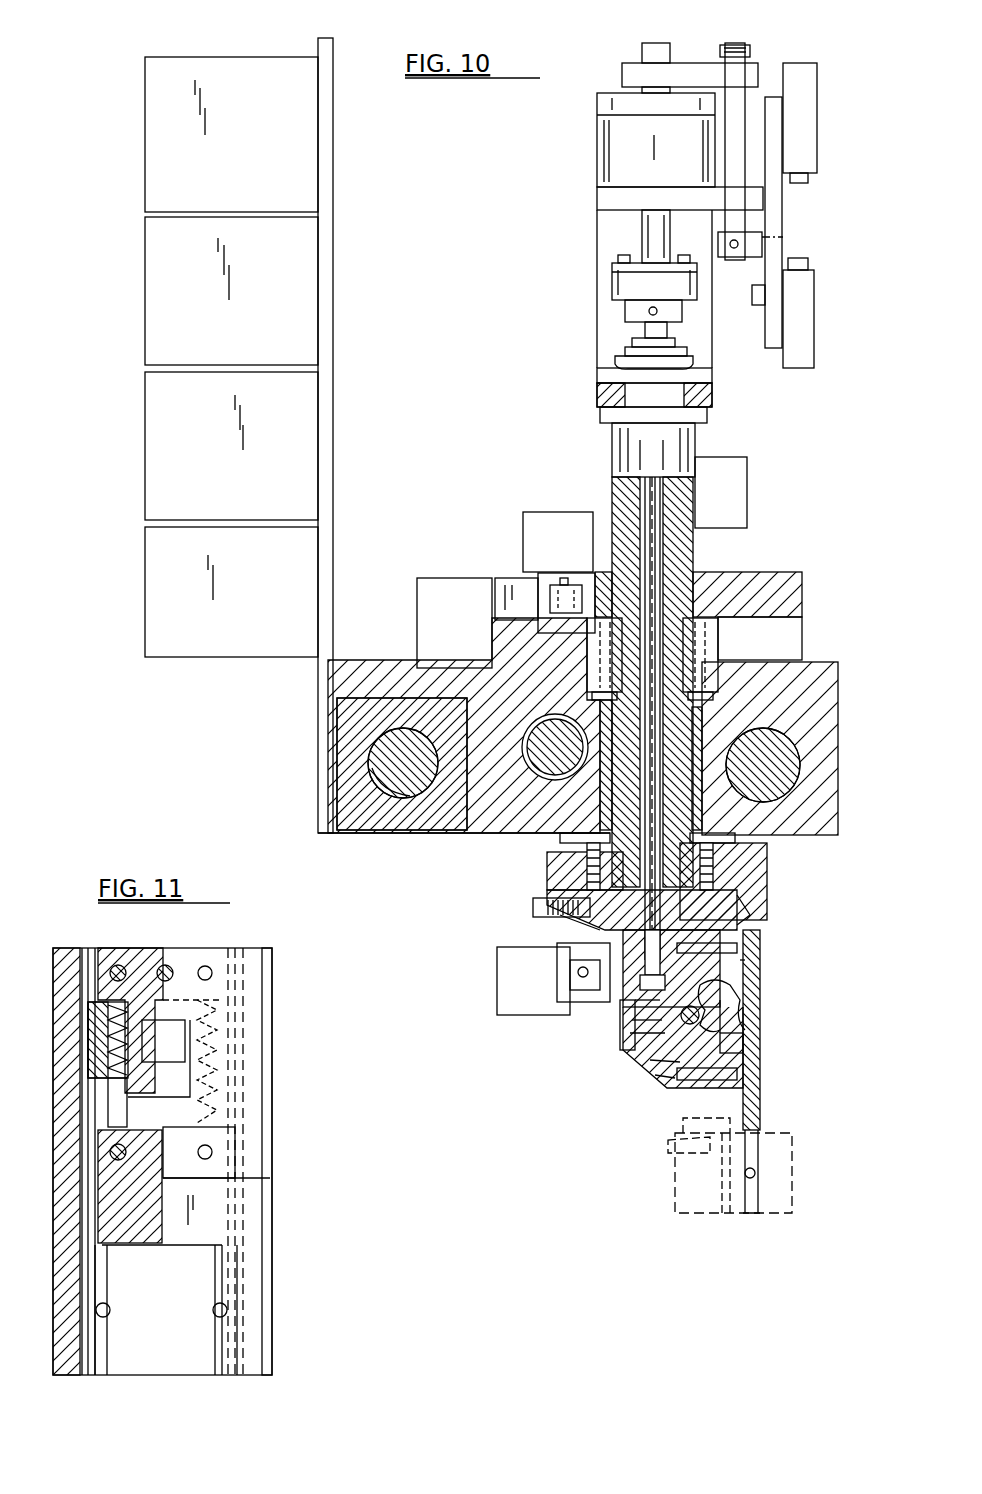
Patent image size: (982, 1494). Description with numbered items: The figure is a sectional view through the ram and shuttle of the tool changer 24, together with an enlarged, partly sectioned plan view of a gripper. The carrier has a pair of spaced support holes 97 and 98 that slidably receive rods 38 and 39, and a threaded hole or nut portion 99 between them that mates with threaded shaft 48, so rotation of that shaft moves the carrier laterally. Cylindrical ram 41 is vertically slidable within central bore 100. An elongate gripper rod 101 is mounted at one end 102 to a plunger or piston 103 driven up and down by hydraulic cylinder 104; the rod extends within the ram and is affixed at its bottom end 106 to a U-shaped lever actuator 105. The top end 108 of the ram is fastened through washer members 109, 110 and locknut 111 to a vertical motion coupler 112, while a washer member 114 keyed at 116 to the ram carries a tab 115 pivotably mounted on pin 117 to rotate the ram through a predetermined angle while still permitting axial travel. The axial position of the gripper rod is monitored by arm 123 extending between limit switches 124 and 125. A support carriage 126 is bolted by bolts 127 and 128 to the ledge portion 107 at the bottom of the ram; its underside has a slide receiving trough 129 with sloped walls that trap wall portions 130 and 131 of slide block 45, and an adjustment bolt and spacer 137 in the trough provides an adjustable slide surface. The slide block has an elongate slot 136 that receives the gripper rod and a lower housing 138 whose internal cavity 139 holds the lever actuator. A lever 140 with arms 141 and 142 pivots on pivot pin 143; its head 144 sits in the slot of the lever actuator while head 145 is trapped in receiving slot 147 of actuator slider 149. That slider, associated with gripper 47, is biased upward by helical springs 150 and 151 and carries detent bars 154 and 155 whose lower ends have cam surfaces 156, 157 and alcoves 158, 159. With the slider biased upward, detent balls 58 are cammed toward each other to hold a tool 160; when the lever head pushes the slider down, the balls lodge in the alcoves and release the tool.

In FIG. 10, the tool changer 24 is at (498, 165).
In FIG. 10, the rod 38 is at (392, 763).
In FIG. 10, the rod 39 is at (788, 762).
In FIG. 10, the cylindrical ram 41 is at (610, 488).
In FIG. 10, the slide block 45 is at (720, 905).
In FIG. 10, the tool gripper 47 is at (763, 1107).
In FIG. 11, the tool gripper 47 is at (274, 1212).
In FIG. 10, the threaded shaft 48 is at (540, 752).
In FIG. 10, the detent balls 58 is at (756, 1173).
In FIG. 11, the detent balls 58 is at (213, 1310).
In FIG. 10, the support hole 97 is at (413, 800).
In FIG. 10, the support hole 98 is at (790, 785).
In FIG. 10, the threaded hole or nut portion 99 is at (545, 715).
In FIG. 10, the central bore 100 is at (710, 705).
In FIG. 10, the gripper rod 101 is at (655, 553).
In FIG. 10, the end of gripper rod 102 is at (645, 331).
In FIG. 10, the plunger or piston 103 is at (645, 233).
In FIG. 10, the hydraulic cylinder 104 is at (622, 147).
In FIG. 10, the lever actuator 105 is at (630, 1035).
In FIG. 10, the bottom end of gripper rod 106 is at (635, 1000).
In FIG. 10, the bottom end or peripheral ledge portion of ram 107 is at (585, 862).
In FIG. 10, the top end of ram 108 is at (680, 440).
In FIG. 10, the washer member 109 is at (706, 380).
In FIG. 10, the washer member 110 is at (700, 415).
In FIG. 10, the locknut 111 is at (685, 357).
In FIG. 10, the vertical motion coupler 112 is at (605, 278).
In FIG. 10, the washer member 114 is at (720, 615).
In FIG. 10, the tab or arm 115 is at (545, 622).
In FIG. 10, the key 116 is at (612, 640).
In FIG. 10, the pin 117 is at (564, 578).
In FIG. 10, the arm 123 is at (740, 258).
In FIG. 10, the limit switch 124 is at (806, 158).
In FIG. 10, the limit switch 125 is at (804, 290).
In FIG. 10, the support carriage 126 is at (767, 878).
In FIG. 10, the bolt 127 is at (575, 841).
In FIG. 10, the bolt 128 is at (735, 842).
In FIG. 10, the slide receiving trough 129 is at (745, 905).
In FIG. 10, the wall portion 130 is at (585, 920).
In FIG. 10, the wall portion 131 is at (740, 945).
In FIG. 10, the elongate slot 136 is at (605, 955).
In FIG. 10, the adjustment bolt and spacer 137 is at (560, 900).
In FIG. 10, the lower housing 138 is at (618, 1012).
In FIG. 10, the internal cavity 139 is at (668, 1065).
In FIG. 10, the lever 140 is at (663, 1082).
In FIG. 10, the lever arm 141 is at (680, 1040).
In FIG. 10, the lever arm 142 is at (745, 1022).
In FIG. 10, the pivot point or pivot pin 143 is at (695, 1080).
In FIG. 10, the contoured head 144 is at (628, 1022).
In FIG. 10, the head 145 is at (740, 995).
In FIG. 10, the pivot actuating receiving slot 147 is at (760, 978).
In FIG. 11, the pivot actuating receiving slot 147 is at (165, 1020).
In FIG. 10, the actuator slider 149 is at (745, 1045).
In FIG. 11, the actuator slider 149 is at (140, 1000).
In FIG. 11, the helical spring 150 is at (240, 1053).
In FIG. 11, the helical spring 151 is at (100, 1045).
In FIG. 11, the detent bar 154 is at (85, 1182).
In FIG. 11, the detent bar 155 is at (245, 1150).
In FIG. 11, the cam surface 156 is at (105, 1300).
In FIG. 11, the cam surface 157 is at (218, 1295).
In FIG. 11, the detent ball receiving alcove 158 is at (107, 1280).
In FIG. 11, the detent ball receiving alcove 159 is at (215, 1275).
In FIG. 10, the tool 160 is at (675, 1190).